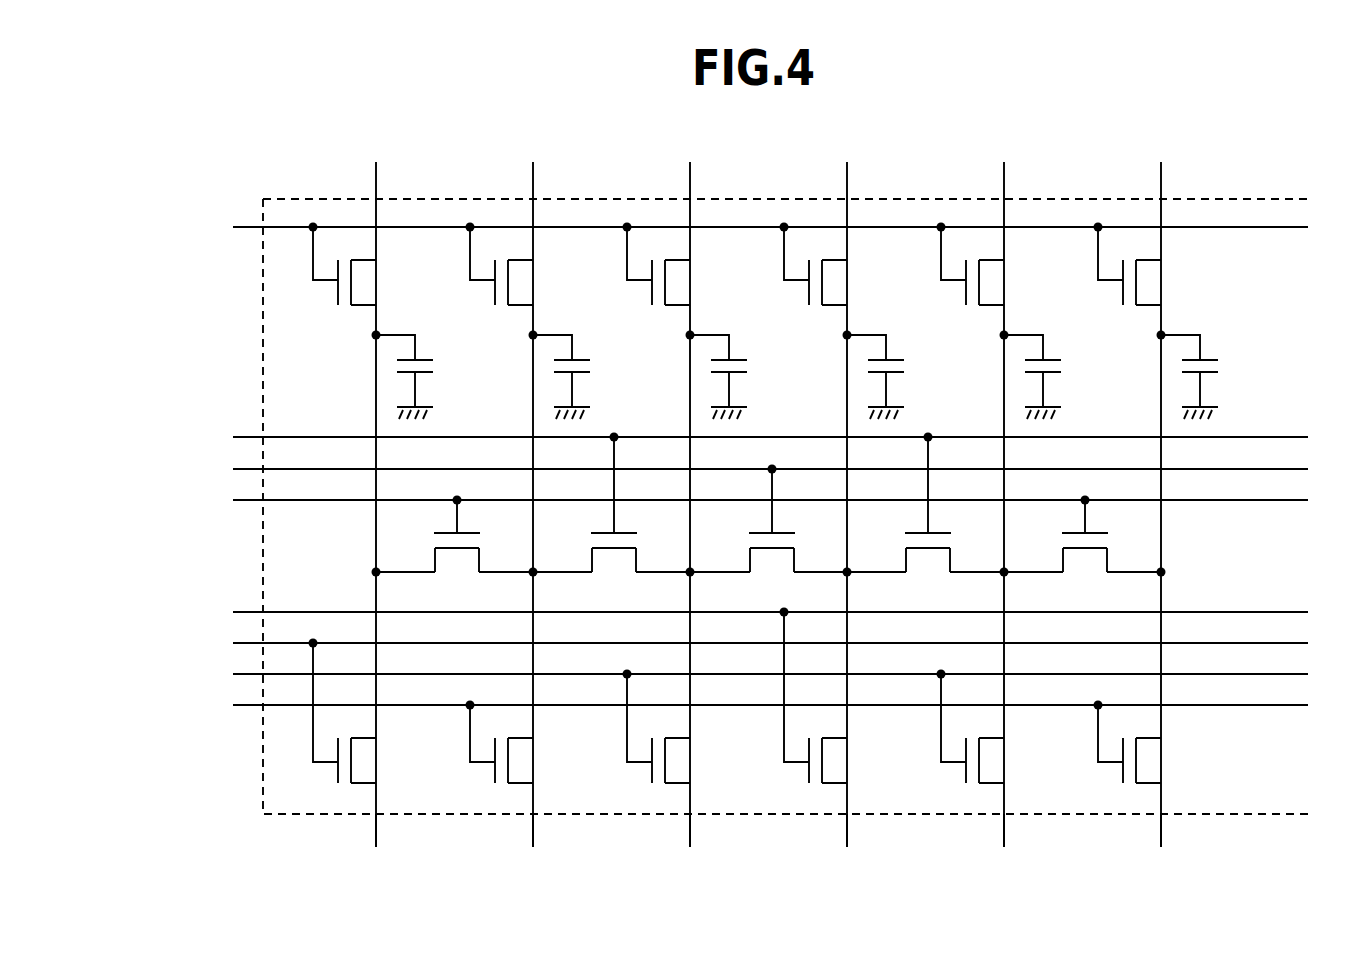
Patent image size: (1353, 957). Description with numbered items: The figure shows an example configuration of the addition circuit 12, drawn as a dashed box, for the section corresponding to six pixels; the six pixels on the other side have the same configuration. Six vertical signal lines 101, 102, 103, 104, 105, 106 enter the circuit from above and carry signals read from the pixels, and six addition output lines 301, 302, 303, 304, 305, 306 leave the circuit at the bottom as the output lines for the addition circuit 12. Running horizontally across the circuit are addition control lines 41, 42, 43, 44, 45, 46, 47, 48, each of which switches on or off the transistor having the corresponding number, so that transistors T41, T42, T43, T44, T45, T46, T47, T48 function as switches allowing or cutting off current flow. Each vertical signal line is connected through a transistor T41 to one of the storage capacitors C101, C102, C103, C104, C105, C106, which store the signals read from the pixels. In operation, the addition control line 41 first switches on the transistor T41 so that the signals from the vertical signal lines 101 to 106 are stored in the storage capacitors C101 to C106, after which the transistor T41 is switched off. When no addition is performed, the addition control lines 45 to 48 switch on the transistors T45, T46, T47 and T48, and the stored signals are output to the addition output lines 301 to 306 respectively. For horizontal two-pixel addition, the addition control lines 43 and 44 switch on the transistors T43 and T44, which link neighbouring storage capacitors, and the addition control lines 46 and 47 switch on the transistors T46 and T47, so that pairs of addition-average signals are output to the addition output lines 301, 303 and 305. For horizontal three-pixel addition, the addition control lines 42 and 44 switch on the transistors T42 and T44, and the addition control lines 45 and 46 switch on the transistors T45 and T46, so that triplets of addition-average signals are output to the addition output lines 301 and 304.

The addition circuit 12 is at (262, 771).
The addition control line 41 is at (753, 227).
The addition control line 42 is at (753, 437).
The addition control line 43 is at (753, 469).
The addition control line 44 is at (753, 500).
The addition control line 45 is at (753, 612).
The addition control line 46 is at (753, 643).
The addition control line 47 is at (753, 674).
The addition control line 48 is at (753, 705).
The vertical signal line 101 is at (376, 490).
The vertical signal line 102 is at (533, 490).
The vertical signal line 103 is at (690, 490).
The vertical signal line 104 is at (847, 490).
The vertical signal line 105 is at (1004, 490).
The vertical signal line 106 is at (1161, 490).
The addition output line 301 is at (376, 848).
The addition output line 302 is at (533, 848).
The addition output line 303 is at (690, 848).
The addition output line 304 is at (847, 848).
The addition output line 305 is at (1004, 848).
The addition output line 306 is at (1161, 848).
The transistor T41 is at (722, 270).
The transistor T42 is at (768, 520).
The transistor T43 is at (768, 536).
The transistor T44 is at (769, 551).
The transistor T45 is at (800, 704).
The transistor T46 is at (329, 719).
The transistor T47 is at (800, 735).
The transistor T48 is at (800, 750).
The storage capacitor C101 is at (440, 375).
The storage capacitor C102 is at (597, 375).
The storage capacitor C103 is at (754, 375).
The storage capacitor C104 is at (911, 375).
The storage capacitor C105 is at (1068, 375).
The storage capacitor C106 is at (1225, 375).